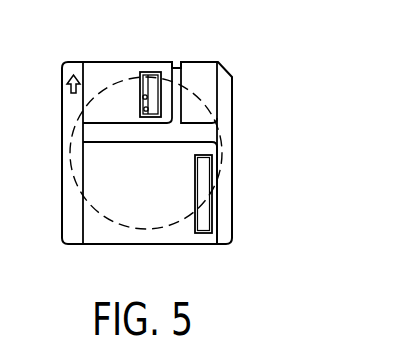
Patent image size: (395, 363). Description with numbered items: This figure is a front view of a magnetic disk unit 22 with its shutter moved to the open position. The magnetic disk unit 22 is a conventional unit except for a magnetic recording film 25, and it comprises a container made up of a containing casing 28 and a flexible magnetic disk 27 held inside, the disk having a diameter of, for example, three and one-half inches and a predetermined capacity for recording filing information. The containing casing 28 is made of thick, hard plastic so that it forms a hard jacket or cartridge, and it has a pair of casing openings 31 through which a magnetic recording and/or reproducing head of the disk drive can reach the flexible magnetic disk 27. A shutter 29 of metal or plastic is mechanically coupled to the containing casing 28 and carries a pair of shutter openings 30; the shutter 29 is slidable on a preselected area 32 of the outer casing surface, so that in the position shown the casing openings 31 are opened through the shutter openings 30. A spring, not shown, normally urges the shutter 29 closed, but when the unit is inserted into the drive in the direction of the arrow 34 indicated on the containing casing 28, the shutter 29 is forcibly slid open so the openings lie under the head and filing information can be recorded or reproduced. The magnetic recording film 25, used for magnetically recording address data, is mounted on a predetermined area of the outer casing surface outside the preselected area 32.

The magnetic disk unit 22 is at (243, 68).
The magnetic recording film 25 is at (203, 222).
The flexible magnetic disk 27 is at (150, 72).
The containing casing 28 is at (233, 123).
The shutter 29 is at (102, 72).
The shutter openings 30 is at (145, 111).
The casing openings 31 is at (143, 97).
The preselected area 32 is at (192, 70).
The arrow 34 is at (63, 86).